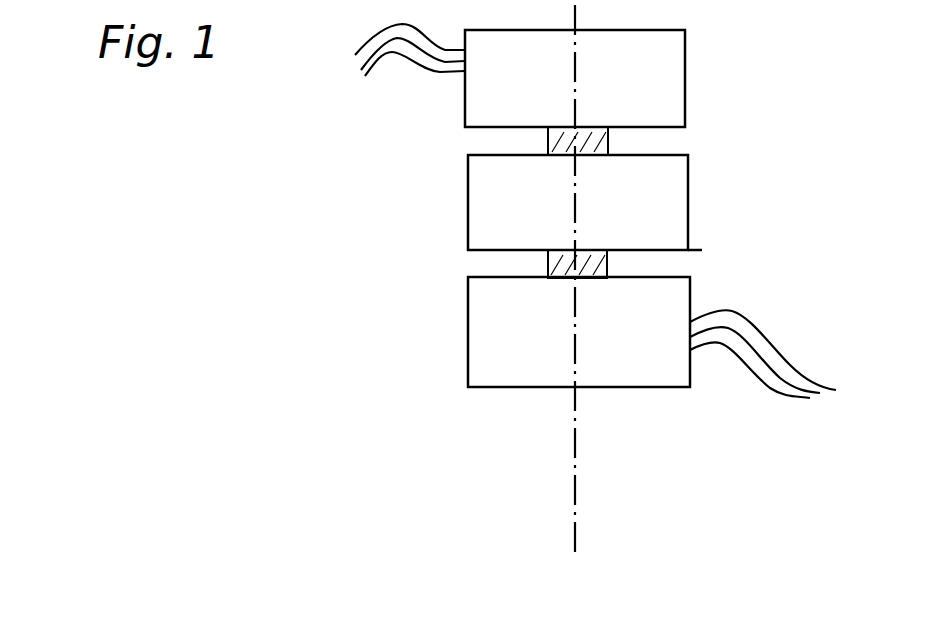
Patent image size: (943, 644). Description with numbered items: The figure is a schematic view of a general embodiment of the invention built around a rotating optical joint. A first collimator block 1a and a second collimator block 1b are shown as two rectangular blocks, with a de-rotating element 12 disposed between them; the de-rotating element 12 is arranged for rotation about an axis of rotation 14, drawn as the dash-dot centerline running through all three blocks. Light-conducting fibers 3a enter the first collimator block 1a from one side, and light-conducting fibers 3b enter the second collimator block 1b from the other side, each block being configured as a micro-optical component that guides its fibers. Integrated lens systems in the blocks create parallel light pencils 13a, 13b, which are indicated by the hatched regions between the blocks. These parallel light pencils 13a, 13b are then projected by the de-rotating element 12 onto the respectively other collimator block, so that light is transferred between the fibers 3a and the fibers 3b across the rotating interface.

The first collimator block 1a is at (685, 52).
The second collimator block 1b is at (668, 378).
The light-conducting fibers 3a is at (353, 74).
The light-conducting fibers 3b is at (834, 400).
The de-rotating element 12 is at (680, 210).
The parallel light pencil 13a is at (606, 148).
The parallel light pencil 13b is at (605, 272).
The axis of rotation 14 is at (576, 512).